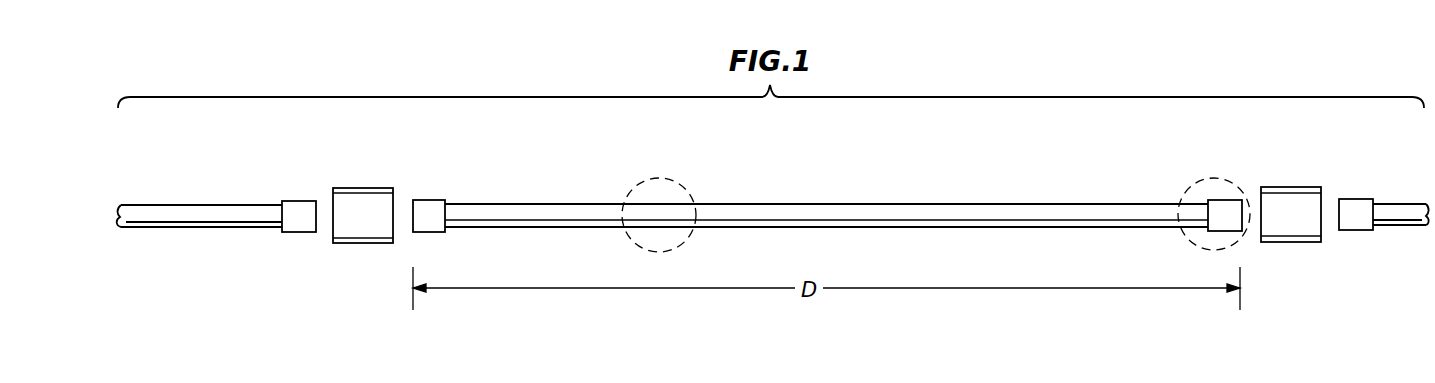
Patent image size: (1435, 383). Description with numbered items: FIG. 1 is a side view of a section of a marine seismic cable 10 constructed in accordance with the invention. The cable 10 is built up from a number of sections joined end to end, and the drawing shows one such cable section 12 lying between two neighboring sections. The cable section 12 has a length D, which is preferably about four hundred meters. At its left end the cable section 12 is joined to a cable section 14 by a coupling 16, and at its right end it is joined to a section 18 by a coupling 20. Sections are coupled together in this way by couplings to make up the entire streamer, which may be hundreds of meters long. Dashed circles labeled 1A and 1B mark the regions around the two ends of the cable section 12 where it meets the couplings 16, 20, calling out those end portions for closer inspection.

The marine seismic cable 10 is at (827, 183).
The cable section 12 is at (872, 204).
The cable section 14 is at (146, 204).
The coupling 16 is at (353, 243).
The cable section 18 is at (1396, 229).
The coupling 20 is at (1297, 243).
The detail circle 1A is at (688, 186).
The detail circle 1B is at (1200, 178).